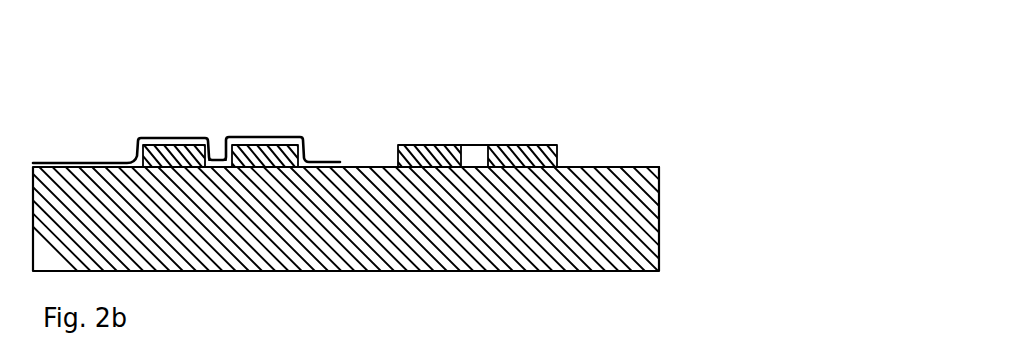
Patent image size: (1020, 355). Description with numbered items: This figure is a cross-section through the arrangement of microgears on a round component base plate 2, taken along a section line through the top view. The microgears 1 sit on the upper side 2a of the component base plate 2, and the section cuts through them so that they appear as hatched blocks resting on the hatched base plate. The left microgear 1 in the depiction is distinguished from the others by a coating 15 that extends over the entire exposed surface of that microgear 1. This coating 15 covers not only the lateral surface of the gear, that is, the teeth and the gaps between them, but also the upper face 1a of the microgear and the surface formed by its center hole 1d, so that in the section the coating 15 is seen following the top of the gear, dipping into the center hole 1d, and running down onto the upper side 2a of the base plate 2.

The microgear 1 is at (271, 152).
The upper face 1a is at (163, 140).
The center hole 1d is at (218, 154).
The component base plate 2 is at (641, 208).
The upper side 2a is at (590, 167).
The coating 15 is at (75, 162).